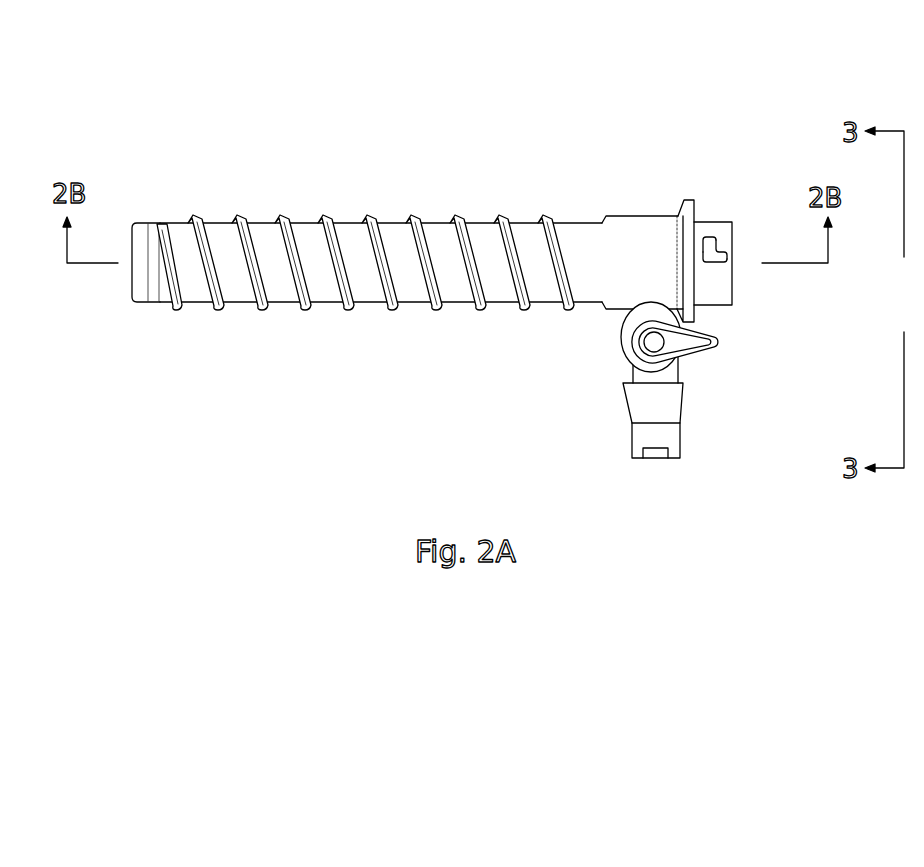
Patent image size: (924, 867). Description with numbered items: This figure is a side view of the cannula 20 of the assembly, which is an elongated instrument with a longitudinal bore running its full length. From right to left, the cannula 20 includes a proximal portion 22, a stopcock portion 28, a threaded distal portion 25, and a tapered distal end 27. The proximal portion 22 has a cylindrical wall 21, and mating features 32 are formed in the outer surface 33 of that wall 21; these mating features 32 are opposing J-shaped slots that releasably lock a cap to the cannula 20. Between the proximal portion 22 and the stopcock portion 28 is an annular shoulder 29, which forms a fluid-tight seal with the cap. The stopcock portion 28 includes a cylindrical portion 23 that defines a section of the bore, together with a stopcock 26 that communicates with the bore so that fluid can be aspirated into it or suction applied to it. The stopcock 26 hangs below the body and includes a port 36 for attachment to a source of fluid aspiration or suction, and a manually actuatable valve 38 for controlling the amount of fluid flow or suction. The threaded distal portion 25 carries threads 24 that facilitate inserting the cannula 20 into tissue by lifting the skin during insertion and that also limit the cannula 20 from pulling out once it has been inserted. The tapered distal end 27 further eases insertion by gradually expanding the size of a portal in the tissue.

The cannula 20 is at (471, 263).
The cylindrical wall 21 is at (725, 248).
The proximal portion 22 is at (725, 237).
The cylindrical portion 23 is at (628, 242).
The threads 24 is at (273, 222).
The threaded distal portion 25 is at (388, 223).
The stopcock 26 is at (683, 400).
The tapered distal end 27 is at (147, 222).
The stopcock portion 28 is at (658, 227).
The annular shoulder 29 is at (693, 202).
The mating features 32 is at (730, 262).
The outer surface 33 is at (707, 233).
The port 36 is at (636, 444).
The manually actuatable valve 38 is at (718, 345).